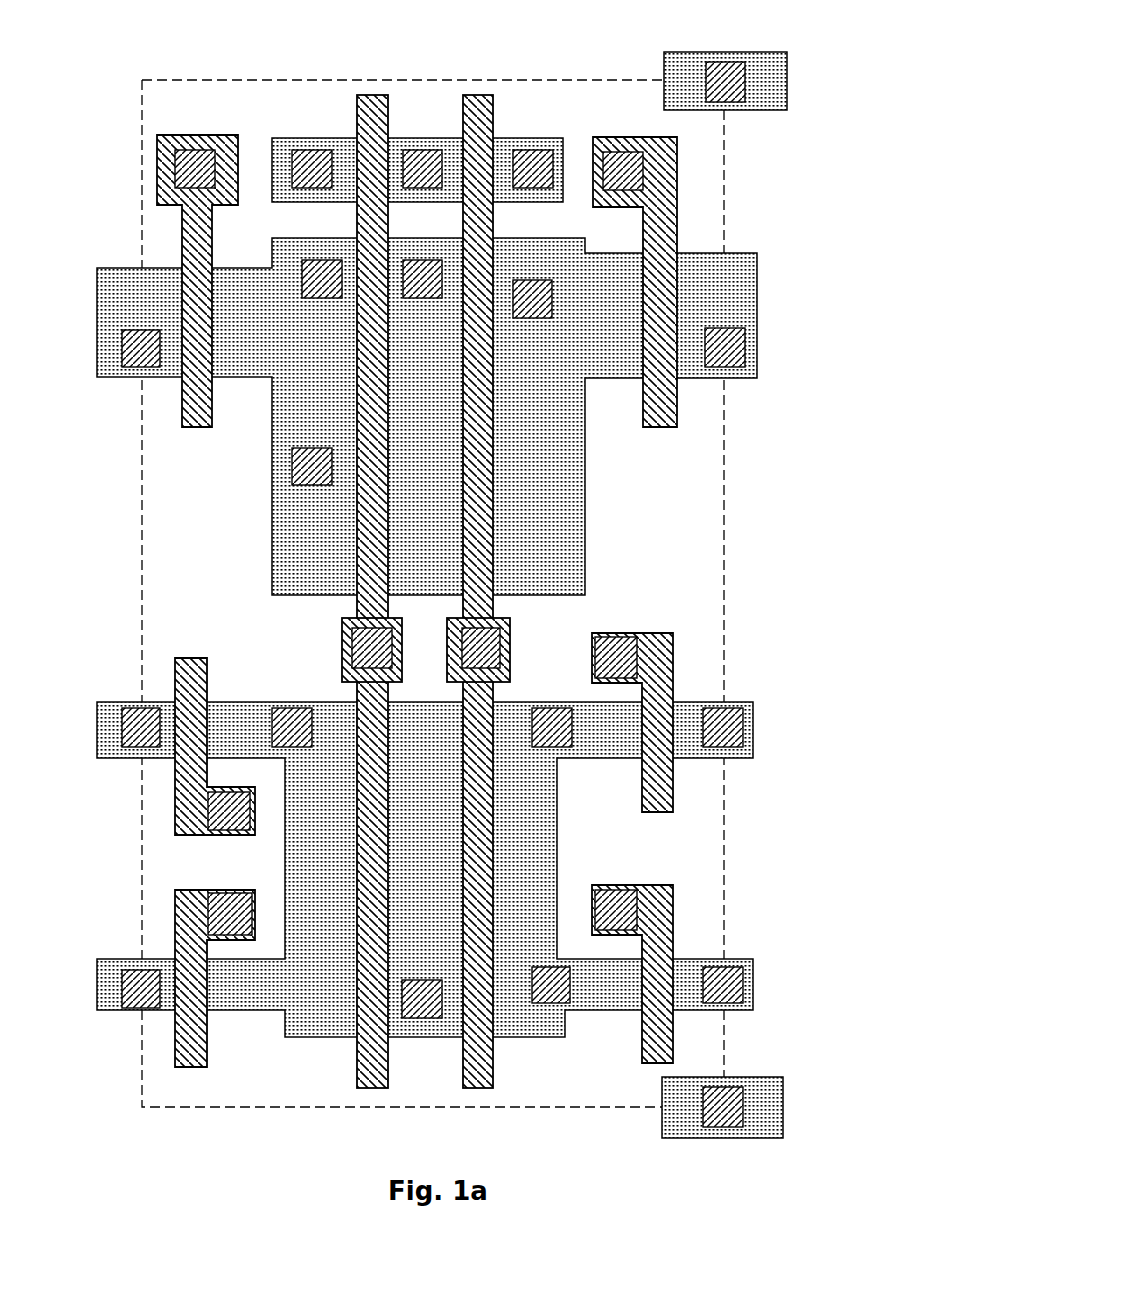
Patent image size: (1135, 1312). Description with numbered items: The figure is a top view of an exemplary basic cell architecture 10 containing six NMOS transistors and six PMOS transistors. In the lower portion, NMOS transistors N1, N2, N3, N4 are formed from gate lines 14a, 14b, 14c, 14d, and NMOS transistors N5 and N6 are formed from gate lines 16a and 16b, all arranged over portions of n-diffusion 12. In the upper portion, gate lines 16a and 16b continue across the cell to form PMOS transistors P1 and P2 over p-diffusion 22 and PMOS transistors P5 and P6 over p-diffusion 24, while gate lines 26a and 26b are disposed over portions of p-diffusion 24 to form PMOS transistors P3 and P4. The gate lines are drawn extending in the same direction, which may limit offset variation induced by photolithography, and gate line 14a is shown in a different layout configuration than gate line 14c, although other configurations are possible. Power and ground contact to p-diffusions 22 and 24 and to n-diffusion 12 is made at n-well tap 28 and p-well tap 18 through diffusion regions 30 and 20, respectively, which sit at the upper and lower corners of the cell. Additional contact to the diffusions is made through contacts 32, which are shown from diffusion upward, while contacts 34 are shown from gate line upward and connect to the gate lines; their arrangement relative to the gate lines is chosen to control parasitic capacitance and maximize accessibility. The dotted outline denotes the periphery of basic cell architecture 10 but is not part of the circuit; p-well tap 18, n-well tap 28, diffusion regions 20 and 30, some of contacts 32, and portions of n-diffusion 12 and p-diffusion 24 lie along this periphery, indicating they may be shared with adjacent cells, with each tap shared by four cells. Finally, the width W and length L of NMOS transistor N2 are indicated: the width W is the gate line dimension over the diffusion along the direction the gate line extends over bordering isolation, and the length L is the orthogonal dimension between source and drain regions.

The basic cell architecture 10 is at (865, 62).
The n-diffusion 12 is at (532, 802).
The gate line 14a is at (190, 692).
The gate line 14b is at (653, 782).
The gate line 14c is at (180, 983).
The gate line 14d is at (673, 980).
The gate line 16a is at (388, 430).
The gate line 16b is at (490, 423).
The p-well tap 18 is at (730, 1092).
The diffusion region 20 is at (783, 1107).
The p-diffusion 22 is at (398, 145).
The p-diffusion 24 is at (563, 523).
The gate line 26a is at (210, 316).
The gate line 26b is at (653, 288).
The n-well tap 28 is at (735, 95).
The diffusion region 30 is at (770, 100).
The contacts 32 is at (745, 347).
The contacts 34 is at (647, 168).
The PMOS transistor P1 is at (348, 130).
The PMOS transistor P2 is at (505, 130).
The PMOS transistor P3 is at (170, 260).
The PMOS transistor P4 is at (685, 238).
The PMOS transistor P5 is at (347, 388).
The PMOS transistor P6 is at (518, 378).
The NMOS transistor N1 is at (160, 772).
The NMOS transistor N2 is at (685, 692).
The NMOS transistor N3 is at (160, 948).
The NMOS transistor N4 is at (683, 948).
The NMOS transistor N5 is at (352, 857).
The NMOS transistor N6 is at (498, 840).
The width W is at (633, 704).
The length L is at (672, 743).